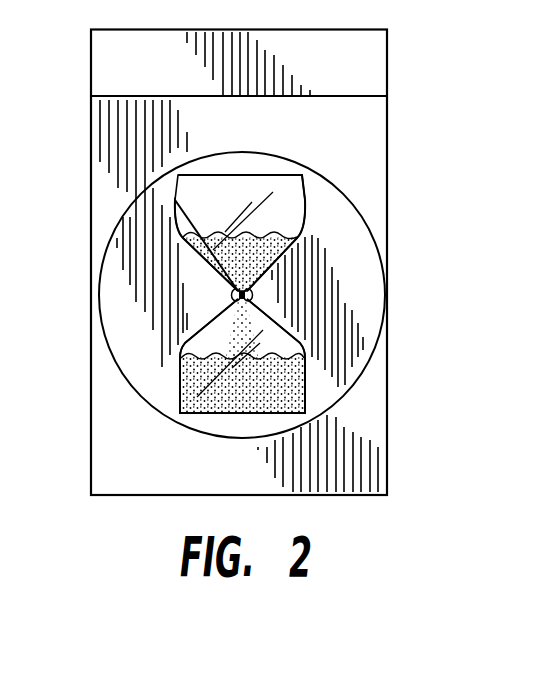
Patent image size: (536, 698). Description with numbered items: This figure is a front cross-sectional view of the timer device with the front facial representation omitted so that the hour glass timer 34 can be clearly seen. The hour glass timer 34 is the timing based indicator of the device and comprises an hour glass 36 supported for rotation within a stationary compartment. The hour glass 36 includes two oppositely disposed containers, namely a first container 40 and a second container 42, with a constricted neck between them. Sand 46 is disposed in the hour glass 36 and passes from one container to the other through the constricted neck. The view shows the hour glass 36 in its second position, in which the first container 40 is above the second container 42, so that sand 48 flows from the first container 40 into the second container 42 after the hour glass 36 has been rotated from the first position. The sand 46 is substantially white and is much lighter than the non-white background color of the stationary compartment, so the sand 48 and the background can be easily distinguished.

The hour glass timer 34 is at (389, 117).
The hour glass 36 is at (308, 219).
The first container 40 is at (248, 175).
The second container 42 is at (298, 350).
The sand 46 is at (200, 250).
The sand 48 is at (200, 345).